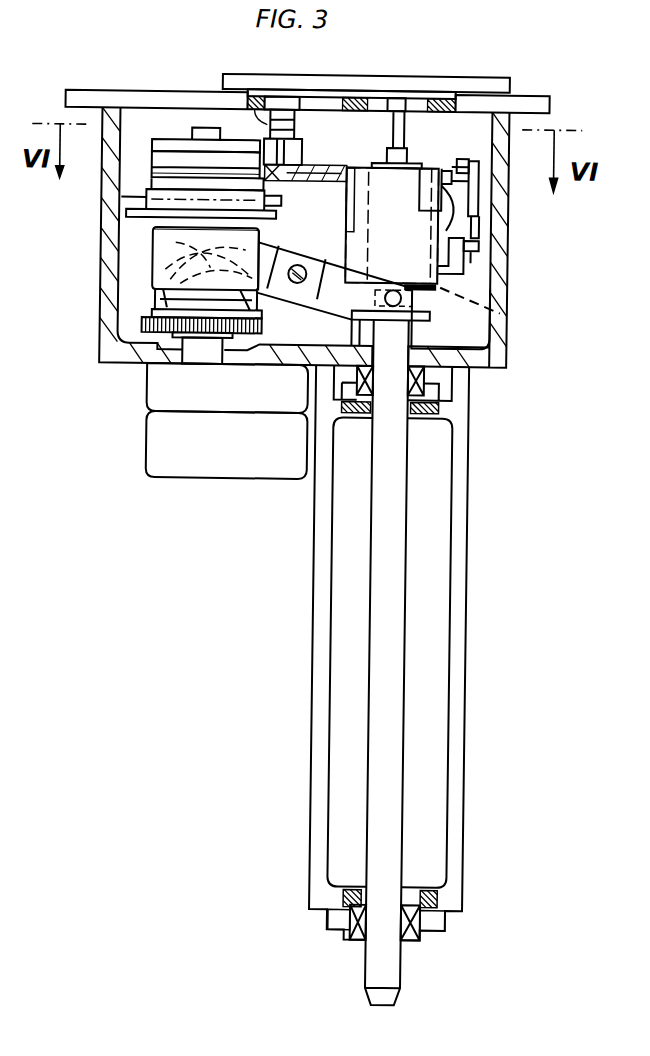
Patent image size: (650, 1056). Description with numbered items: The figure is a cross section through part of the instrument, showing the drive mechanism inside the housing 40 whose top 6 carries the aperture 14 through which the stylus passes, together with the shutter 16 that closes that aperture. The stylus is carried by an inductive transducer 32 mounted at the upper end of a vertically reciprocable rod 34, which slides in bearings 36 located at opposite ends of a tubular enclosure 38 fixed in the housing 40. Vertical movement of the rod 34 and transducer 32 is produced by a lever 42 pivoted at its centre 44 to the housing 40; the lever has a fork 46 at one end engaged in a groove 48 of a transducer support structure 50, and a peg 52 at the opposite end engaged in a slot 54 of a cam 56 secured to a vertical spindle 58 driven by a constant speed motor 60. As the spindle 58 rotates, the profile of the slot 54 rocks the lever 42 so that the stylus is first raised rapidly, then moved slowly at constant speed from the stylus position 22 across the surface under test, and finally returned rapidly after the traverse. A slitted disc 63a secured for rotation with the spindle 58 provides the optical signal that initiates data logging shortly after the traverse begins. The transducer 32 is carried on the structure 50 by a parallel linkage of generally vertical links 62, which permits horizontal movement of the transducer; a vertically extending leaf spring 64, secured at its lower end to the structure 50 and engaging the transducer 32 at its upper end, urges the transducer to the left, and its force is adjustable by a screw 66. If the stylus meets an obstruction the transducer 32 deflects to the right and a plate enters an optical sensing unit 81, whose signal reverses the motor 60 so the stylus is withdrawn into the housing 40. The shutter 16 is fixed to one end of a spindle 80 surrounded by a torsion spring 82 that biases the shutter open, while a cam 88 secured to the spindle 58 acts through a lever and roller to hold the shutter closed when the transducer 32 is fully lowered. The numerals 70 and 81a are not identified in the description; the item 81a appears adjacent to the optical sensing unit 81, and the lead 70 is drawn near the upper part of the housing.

The top 6 is at (63, 101).
The aperture 14 is at (437, 96).
The shutter 16 is at (306, 90).
The stylus position 22 is at (417, 91).
The inductive transducer 32 is at (406, 158).
The vertically reciprocable rod 34 is at (383, 333).
The bearings 36 is at (426, 375).
The tubular enclosure 38 is at (468, 656).
The housing 40 is at (103, 322).
The lever 42 is at (323, 308).
The centre pivot 44 is at (299, 267).
The fork 46 is at (500, 312).
The groove 48 is at (430, 316).
The transducer support structure 50 is at (455, 273).
The peg 52 is at (150, 234).
The slot 54 is at (157, 277).
The cam 56 is at (158, 303).
The vertical spindle 58 is at (190, 130).
The constant speed motor 60 is at (160, 432).
The links 62 is at (425, 176).
The disc 63a is at (130, 206).
The leaf spring 64 is at (463, 202).
The screw 66 is at (480, 250).
The connector 70 is at (153, 177).
The spindle 80 is at (324, 91).
The optical sensing unit 81 is at (477, 160).
The tab 81a is at (475, 214).
The torsion spring 82 is at (251, 98).
The cam 88 is at (152, 140).